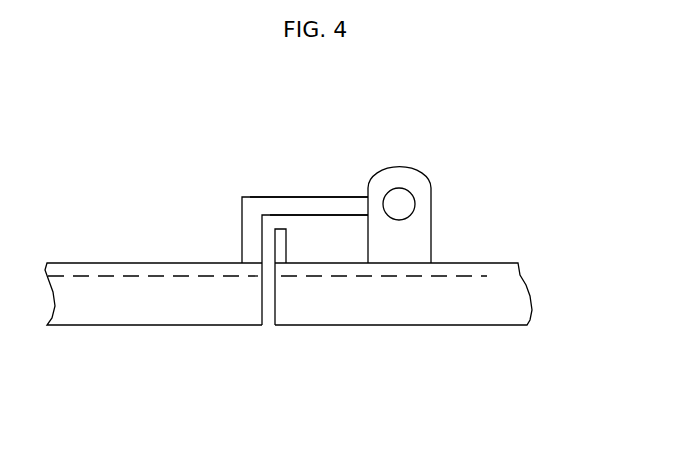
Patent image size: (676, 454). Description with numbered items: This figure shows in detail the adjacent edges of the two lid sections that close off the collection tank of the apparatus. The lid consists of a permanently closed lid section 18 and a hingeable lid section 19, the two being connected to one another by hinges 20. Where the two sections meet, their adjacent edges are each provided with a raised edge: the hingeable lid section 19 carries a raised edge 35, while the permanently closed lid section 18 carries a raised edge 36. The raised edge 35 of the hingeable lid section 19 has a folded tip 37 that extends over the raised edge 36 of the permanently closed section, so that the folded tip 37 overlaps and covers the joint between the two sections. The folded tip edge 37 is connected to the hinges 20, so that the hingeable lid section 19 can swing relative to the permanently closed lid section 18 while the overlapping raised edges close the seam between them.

The permanently closed lid section 18 is at (445, 298).
The hingeable lid section 19 is at (130, 310).
The hinge 20 is at (415, 182).
The raised edge 35 is at (235, 216).
The raised edge 36 is at (280, 251).
The folded tip 37 is at (323, 205).